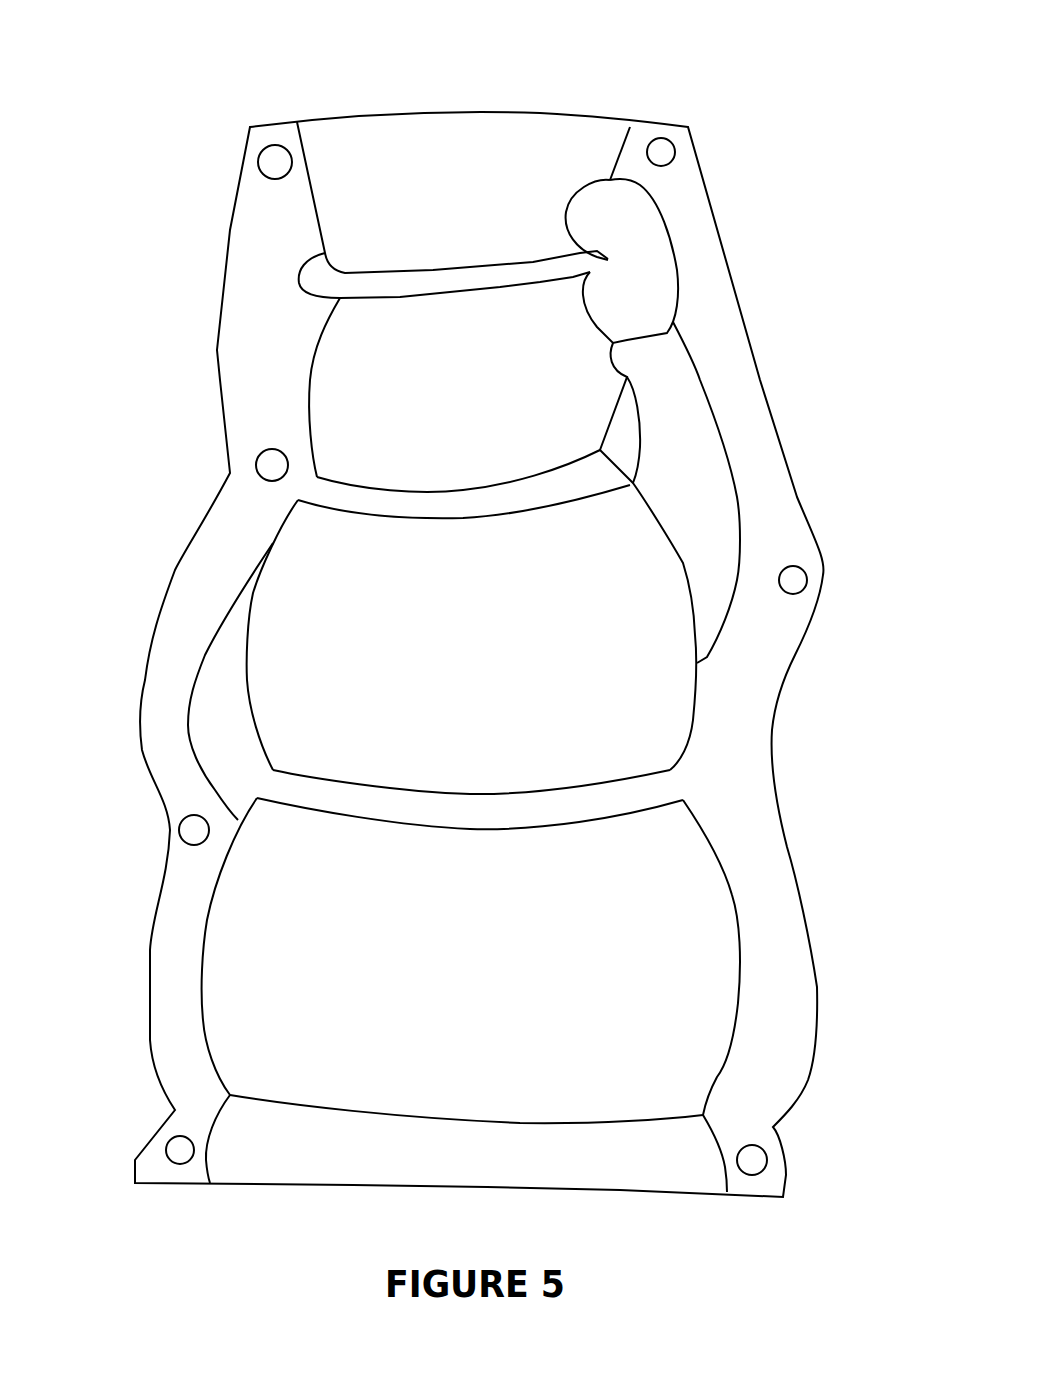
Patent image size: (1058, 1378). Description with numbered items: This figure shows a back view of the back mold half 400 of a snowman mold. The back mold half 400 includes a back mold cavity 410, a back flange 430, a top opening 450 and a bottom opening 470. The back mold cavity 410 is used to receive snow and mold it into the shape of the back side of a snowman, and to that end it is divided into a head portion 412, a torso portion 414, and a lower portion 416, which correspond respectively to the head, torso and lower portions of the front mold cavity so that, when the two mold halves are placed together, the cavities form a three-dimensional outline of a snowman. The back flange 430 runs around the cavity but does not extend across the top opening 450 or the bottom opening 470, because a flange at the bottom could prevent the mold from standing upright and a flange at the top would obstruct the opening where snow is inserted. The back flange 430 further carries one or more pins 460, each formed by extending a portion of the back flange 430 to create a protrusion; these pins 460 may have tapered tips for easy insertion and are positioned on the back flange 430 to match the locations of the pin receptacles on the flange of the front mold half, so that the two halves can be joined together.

The back mold half 400 is at (920, 1306).
The back mold cavity 410 is at (740, 917).
The head portion 412 is at (310, 355).
The torso portion 414 is at (213, 645).
The lower portion 416 is at (195, 952).
The back flange 430 is at (790, 685).
The top opening 450 is at (540, 112).
The pins 460 is at (795, 565).
The bottom opening 470 is at (282, 1185).